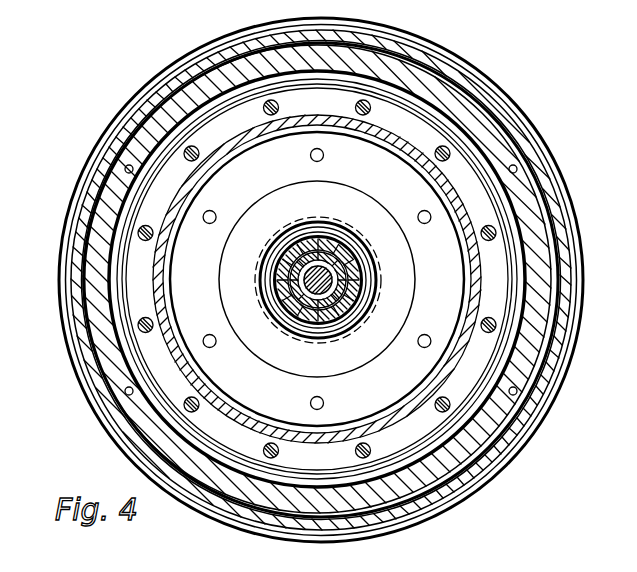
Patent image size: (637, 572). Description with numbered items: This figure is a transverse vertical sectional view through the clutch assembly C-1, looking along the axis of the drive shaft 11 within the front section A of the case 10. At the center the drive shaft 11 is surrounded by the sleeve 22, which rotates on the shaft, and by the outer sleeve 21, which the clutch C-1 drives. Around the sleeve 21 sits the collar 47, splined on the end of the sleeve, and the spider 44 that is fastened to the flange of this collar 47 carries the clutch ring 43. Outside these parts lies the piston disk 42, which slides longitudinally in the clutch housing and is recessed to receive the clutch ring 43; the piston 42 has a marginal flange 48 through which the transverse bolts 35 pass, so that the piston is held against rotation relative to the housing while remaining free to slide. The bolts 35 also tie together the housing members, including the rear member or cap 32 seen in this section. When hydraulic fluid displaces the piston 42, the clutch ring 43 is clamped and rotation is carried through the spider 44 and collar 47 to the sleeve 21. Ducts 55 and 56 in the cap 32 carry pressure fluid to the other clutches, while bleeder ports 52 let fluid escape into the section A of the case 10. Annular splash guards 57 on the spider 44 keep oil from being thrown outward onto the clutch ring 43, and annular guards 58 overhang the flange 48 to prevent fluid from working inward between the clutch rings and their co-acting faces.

The case 10 is at (146, 100).
The rear member or cap 32 is at (216, 74).
The annular guards 58 is at (100, 192).
The ducts 56 is at (125, 167).
The ducts 55 is at (517, 168).
The marginal flange 48 is at (137, 285).
The transverse bolts 35 is at (153, 235).
The piston disk 42 is at (167, 303).
The spider 44 is at (369, 212).
The annular splash guards 57 is at (343, 224).
The sleeve 21 is at (281, 331).
The collar 47 is at (300, 291).
The clutch ring 43 is at (363, 300).
The sleeve 22 is at (340, 281).
The drive shaft 11 is at (330, 274).
The bleeder ports 52 is at (348, 518).
The front section A is at (476, 90).
The clutch assembly C-1 is at (410, 193).